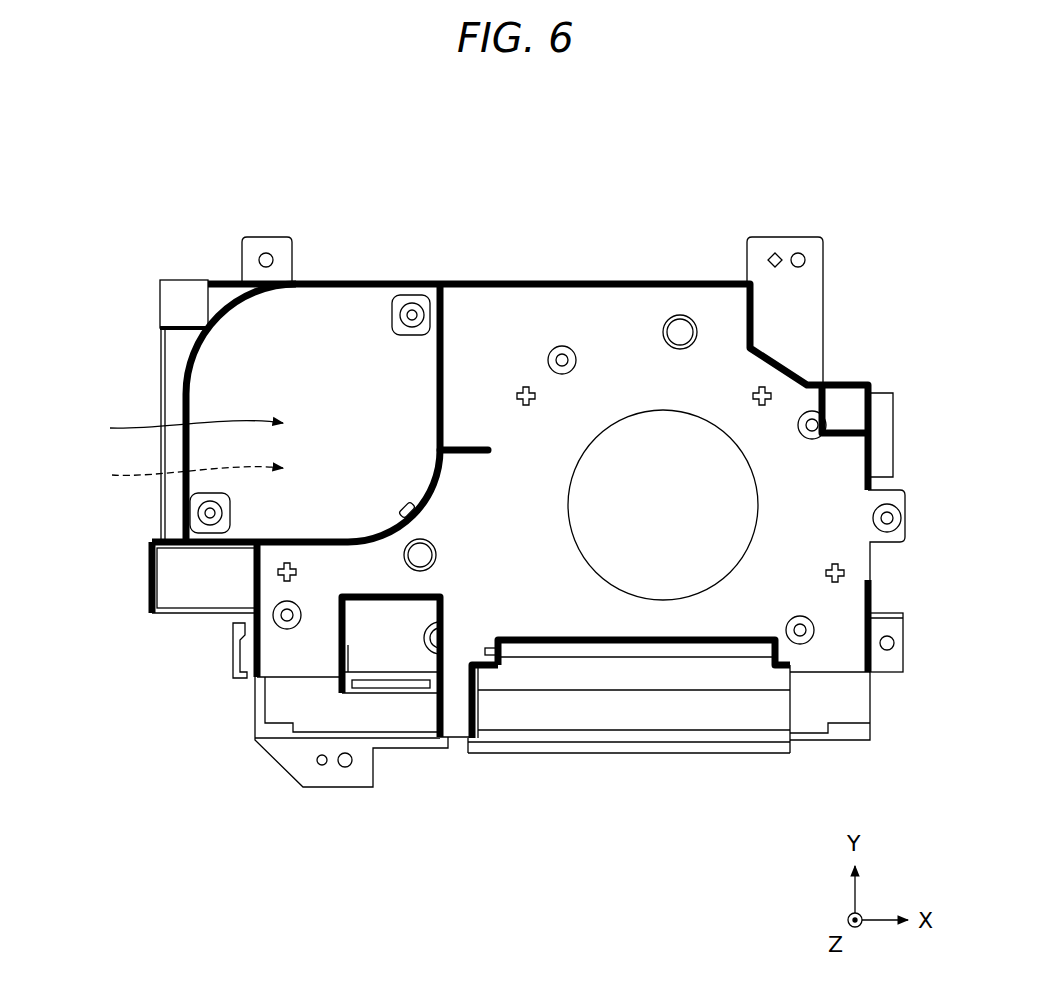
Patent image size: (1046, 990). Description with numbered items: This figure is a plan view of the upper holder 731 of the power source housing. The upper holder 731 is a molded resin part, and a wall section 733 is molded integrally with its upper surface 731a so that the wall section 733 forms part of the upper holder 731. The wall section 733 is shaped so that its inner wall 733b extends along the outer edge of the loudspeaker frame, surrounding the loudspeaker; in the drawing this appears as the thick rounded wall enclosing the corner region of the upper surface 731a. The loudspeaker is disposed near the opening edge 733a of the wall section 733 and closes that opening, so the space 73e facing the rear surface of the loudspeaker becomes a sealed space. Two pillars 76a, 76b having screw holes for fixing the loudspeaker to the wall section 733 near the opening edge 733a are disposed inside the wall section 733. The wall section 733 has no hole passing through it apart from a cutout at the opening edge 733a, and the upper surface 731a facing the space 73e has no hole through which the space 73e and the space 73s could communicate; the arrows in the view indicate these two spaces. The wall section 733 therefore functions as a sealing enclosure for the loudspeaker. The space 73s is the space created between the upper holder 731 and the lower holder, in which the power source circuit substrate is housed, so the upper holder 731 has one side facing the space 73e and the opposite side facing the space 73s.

The upper holder 731 is at (898, 141).
The upper surface 731a is at (340, 362).
The wall section 733 is at (443, 347).
The opening edge 733a is at (192, 358).
The inner wall 733b is at (190, 396).
The space 73e is at (173, 426).
The space 73s is at (173, 471).
The pillar 76a is at (418, 302).
The pillar 76b is at (193, 505).